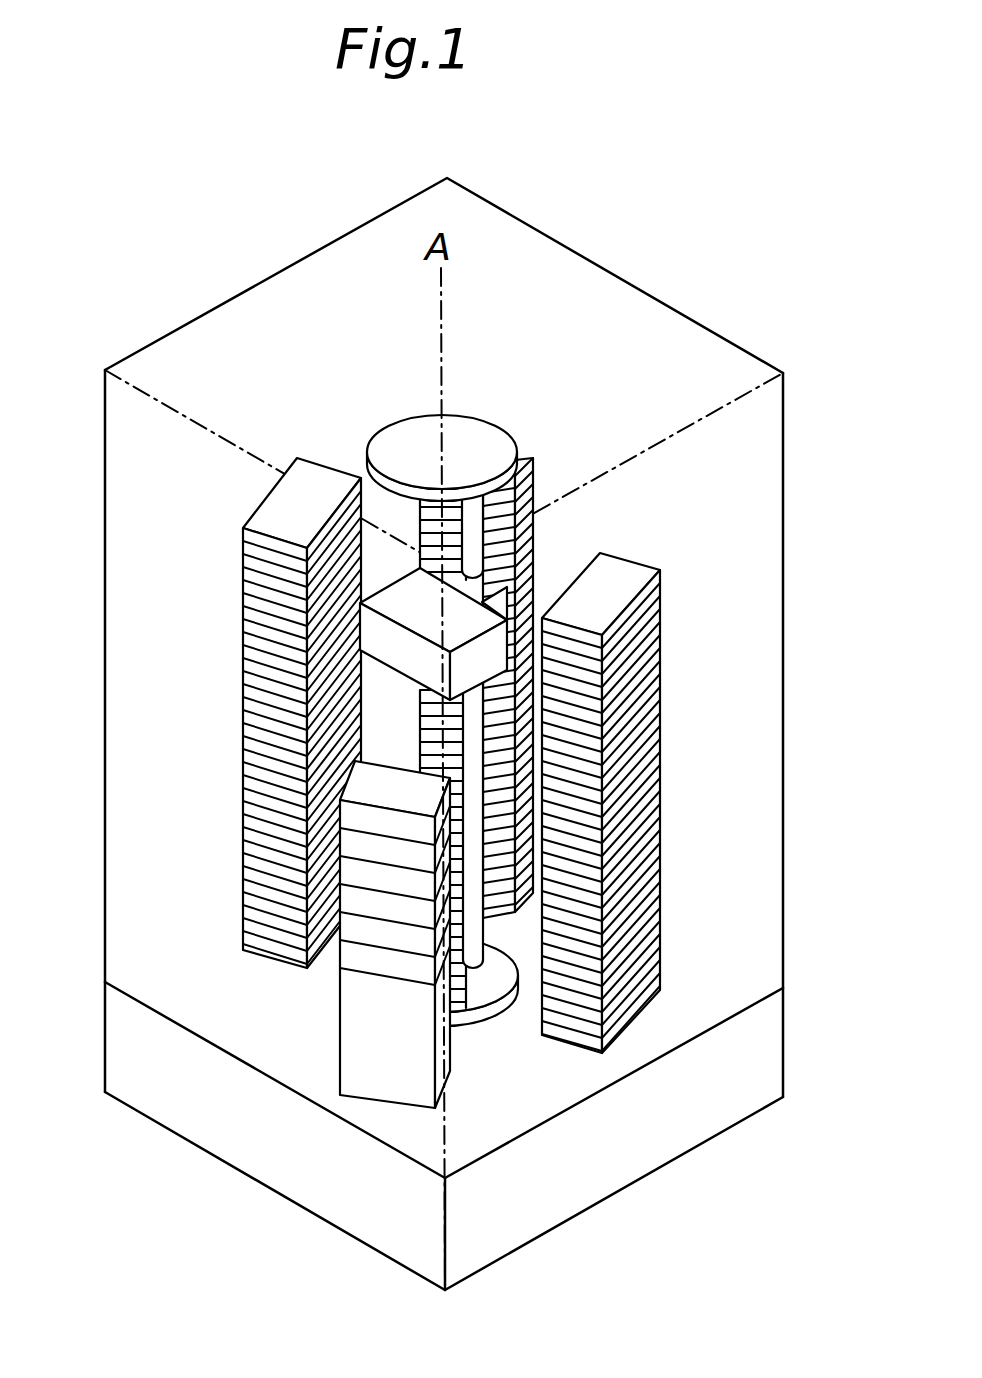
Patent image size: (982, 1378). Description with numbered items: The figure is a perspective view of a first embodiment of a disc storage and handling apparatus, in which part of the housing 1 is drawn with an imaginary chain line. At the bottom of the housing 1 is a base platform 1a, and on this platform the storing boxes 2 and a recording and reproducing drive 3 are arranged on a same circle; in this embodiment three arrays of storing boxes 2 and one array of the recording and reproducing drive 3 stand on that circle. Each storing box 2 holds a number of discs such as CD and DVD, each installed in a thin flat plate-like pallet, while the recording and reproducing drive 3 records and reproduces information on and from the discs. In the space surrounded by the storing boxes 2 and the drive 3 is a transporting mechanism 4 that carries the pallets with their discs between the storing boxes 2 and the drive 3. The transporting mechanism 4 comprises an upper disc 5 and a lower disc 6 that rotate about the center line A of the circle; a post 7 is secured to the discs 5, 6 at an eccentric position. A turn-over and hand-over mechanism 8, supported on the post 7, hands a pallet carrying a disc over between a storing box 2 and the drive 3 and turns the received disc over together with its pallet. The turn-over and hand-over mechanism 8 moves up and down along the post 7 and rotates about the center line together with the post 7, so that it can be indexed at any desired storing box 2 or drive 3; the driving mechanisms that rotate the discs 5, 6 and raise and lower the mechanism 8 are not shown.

The housing 1 is at (258, 284).
The base platform 1a is at (630, 1130).
The storing boxes 2 is at (528, 457).
The recording and reproducing drive 3 is at (360, 948).
The transporting mechanism 4 is at (366, 434).
The upper disc 5 is at (405, 442).
The lower disc 6 is at (482, 985).
The post 7 is at (536, 510).
The turn-over and hand-over mechanism 8 is at (378, 640).